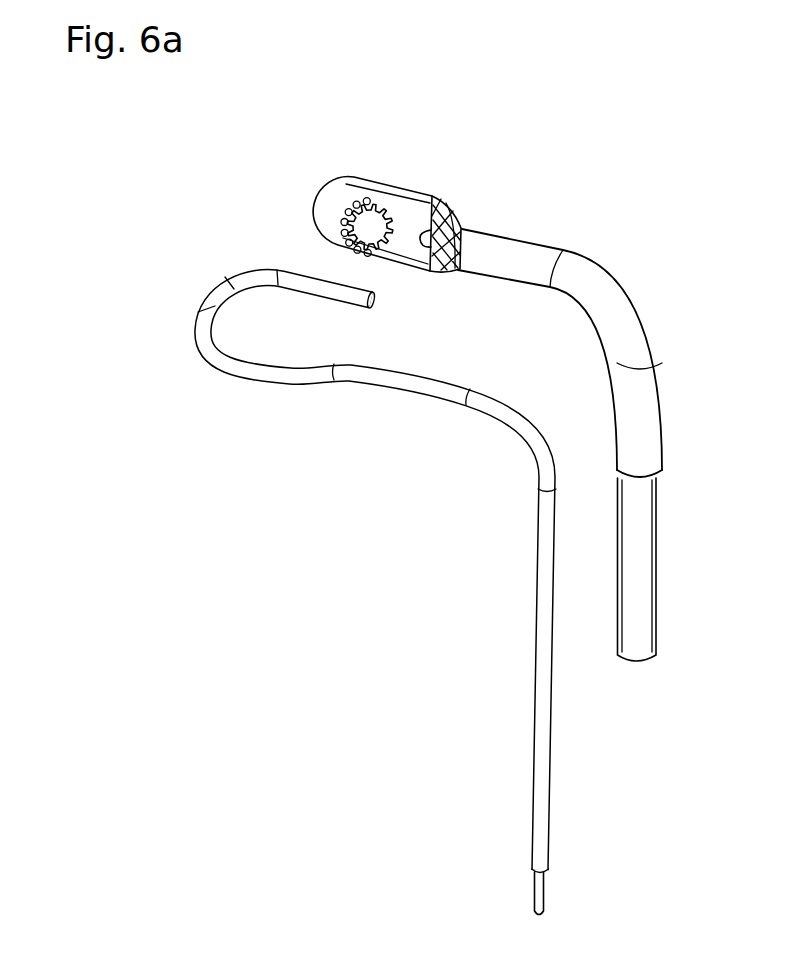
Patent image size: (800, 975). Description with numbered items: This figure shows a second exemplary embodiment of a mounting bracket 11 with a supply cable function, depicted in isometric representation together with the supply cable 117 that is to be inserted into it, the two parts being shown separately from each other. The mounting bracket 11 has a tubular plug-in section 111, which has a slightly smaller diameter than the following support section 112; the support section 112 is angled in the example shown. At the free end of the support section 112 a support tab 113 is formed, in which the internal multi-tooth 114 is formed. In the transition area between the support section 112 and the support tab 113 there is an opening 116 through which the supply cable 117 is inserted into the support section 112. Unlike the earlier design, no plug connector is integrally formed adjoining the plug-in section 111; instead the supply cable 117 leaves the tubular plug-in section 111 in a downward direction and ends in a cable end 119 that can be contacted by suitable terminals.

The mounting bracket 11 is at (622, 228).
The plug-in section 111 is at (637, 520).
The support section 112 is at (637, 313).
The support tab 113 is at (410, 220).
The internal multi-tooth 114 is at (348, 210).
The opening 116 is at (428, 248).
The supply cable 117 is at (486, 398).
The cable end 119 is at (545, 888).